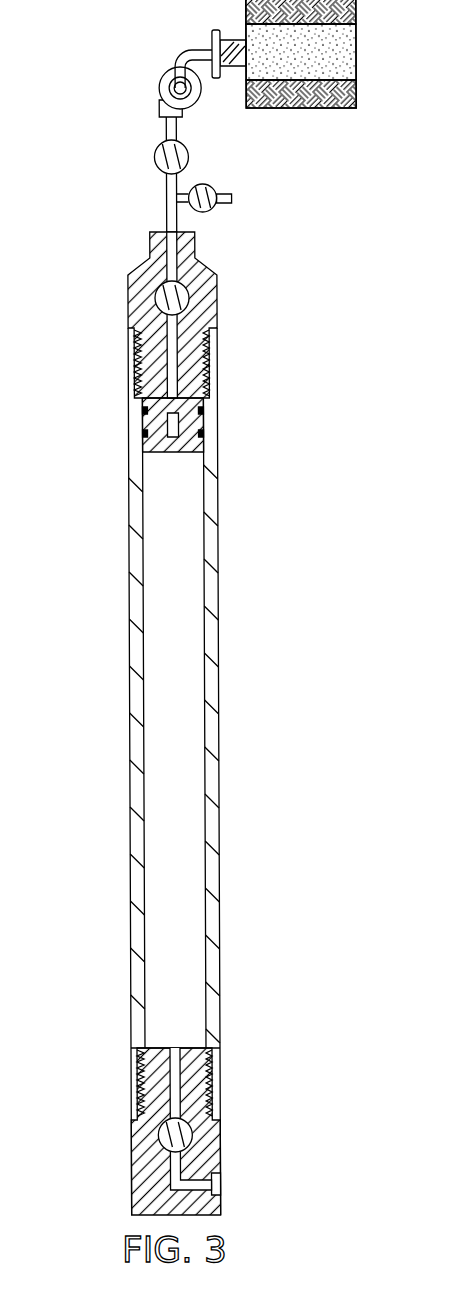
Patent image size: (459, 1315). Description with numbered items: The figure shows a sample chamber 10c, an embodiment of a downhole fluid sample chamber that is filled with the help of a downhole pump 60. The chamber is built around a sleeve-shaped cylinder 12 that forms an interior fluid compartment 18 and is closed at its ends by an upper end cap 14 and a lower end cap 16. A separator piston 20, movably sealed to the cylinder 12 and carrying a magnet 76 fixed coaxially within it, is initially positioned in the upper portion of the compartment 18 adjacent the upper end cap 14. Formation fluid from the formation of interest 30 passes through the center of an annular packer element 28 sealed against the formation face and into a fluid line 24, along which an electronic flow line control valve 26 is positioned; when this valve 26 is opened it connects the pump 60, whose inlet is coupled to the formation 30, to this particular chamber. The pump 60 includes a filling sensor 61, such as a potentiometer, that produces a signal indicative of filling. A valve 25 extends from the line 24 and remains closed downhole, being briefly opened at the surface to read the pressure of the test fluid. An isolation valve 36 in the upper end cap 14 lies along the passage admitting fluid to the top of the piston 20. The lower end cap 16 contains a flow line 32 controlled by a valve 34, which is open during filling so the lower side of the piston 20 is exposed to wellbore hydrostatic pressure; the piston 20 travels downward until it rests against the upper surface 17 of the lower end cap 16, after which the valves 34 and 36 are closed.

The sample chamber 10c is at (84, 239).
The cylinder 12 is at (133, 753).
The upper end cap 14 is at (217, 292).
The lower end cap 16 is at (219, 1148).
The upper surface 17 is at (185, 1049).
The fluid compartment 18 is at (190, 761).
The separator piston 20 is at (169, 453).
The fluid line 24 is at (181, 60).
The valve 25 is at (212, 187).
The electronic flow line control valve 26 is at (155, 157).
The annular packer element 28 is at (212, 36).
The formation of interest 30 is at (357, 50).
The flow line 32 is at (179, 1048).
The valve 34 is at (158, 1133).
The isolation valve 36 is at (156, 302).
The downhole pump 60 is at (160, 84).
The filling sensor 61 is at (160, 104).
The magnet 76 is at (163, 421).